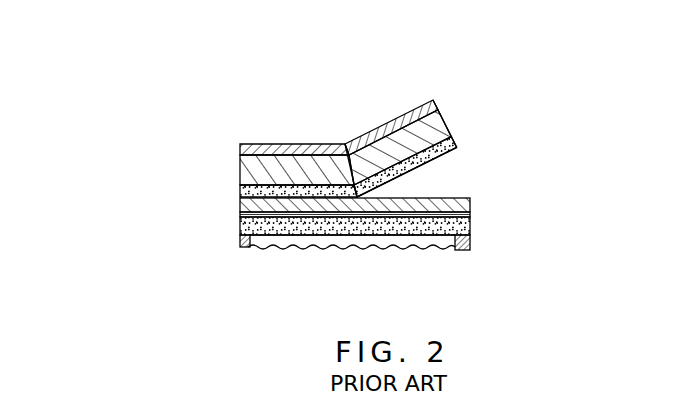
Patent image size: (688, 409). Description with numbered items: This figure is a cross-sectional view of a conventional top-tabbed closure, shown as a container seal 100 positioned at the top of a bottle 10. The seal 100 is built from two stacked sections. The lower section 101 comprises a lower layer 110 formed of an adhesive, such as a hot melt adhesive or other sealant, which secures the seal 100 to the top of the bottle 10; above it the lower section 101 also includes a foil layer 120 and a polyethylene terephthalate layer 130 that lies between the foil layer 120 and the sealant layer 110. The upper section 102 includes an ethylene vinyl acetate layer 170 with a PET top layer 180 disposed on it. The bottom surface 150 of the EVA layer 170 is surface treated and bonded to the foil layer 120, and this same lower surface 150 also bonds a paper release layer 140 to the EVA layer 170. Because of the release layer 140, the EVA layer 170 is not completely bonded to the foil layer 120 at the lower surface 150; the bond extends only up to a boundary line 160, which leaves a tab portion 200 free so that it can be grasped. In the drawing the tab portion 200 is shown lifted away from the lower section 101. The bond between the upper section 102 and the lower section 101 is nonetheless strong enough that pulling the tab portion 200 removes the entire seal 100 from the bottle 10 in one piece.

The container seal 100 is at (344, 167).
The tab portion 200 is at (346, 111).
The upper section 102 is at (452, 88).
The lower section 101 is at (338, 248).
The PET top layer 180 is at (240, 150).
The EVA layer 170 is at (240, 173).
The boundary line 160 is at (348, 143).
The bottom surface 150 is at (240, 192).
The paper release layer 140 is at (447, 157).
The foil layer 120 is at (240, 206).
The PET layer 130 is at (240, 214).
The lower layer 110 is at (240, 229).
The bottle 10 is at (446, 248).